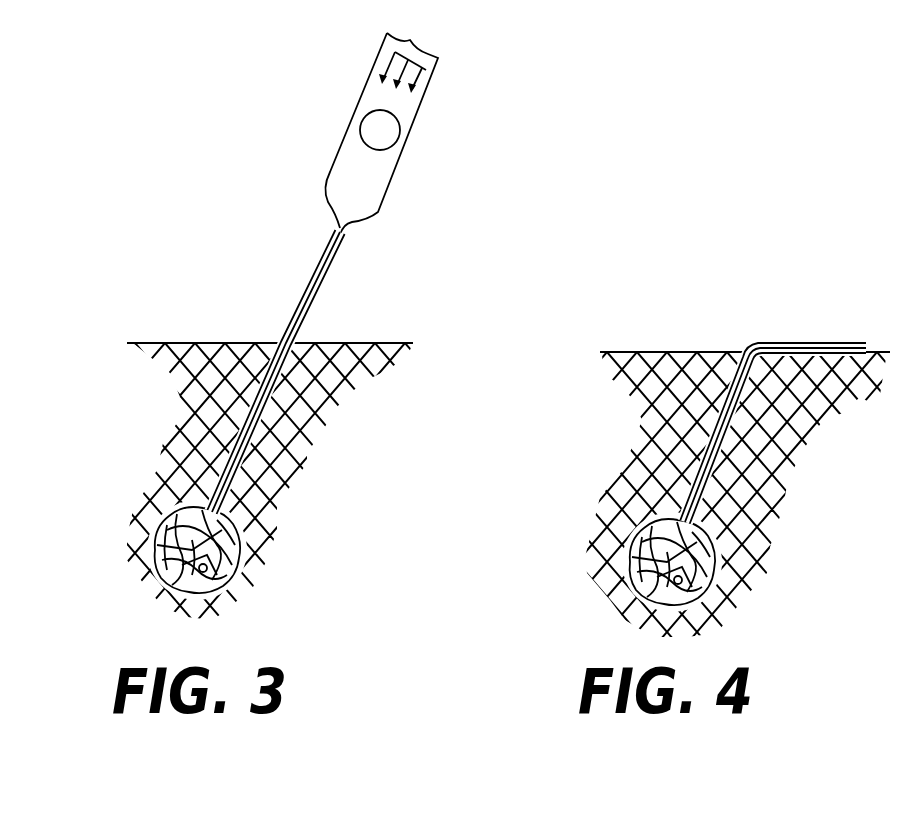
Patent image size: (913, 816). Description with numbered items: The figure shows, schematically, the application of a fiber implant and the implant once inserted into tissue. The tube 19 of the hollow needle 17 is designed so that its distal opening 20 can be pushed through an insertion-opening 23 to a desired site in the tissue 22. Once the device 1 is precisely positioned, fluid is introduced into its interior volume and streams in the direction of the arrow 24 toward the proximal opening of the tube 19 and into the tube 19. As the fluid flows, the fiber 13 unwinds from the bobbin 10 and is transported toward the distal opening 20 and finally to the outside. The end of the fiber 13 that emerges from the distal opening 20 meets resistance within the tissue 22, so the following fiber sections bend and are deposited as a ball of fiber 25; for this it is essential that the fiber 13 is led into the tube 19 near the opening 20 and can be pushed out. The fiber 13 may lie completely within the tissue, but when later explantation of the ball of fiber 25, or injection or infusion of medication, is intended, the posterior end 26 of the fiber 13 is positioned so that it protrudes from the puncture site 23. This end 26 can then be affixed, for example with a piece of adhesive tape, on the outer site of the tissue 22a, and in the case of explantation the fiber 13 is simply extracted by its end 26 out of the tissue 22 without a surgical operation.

In FIG. 3, the device 1 is at (328, 95).
In FIG. 3, the bobbin 10 is at (384, 139).
In FIG. 3, the fiber 13 is at (330, 176).
In FIG. 3, the hollow needle 17 is at (275, 372).
In FIG. 3, the tube 19 is at (303, 294).
In FIG. 3, the distal opening 20 is at (207, 503).
In FIG. 3, the tissue 22 is at (366, 382).
In FIG. 4, the tissue 22 is at (670, 387).
In FIG. 4, the outer site of the tissue 22a is at (724, 348).
In FIG. 3, the insertion-opening 23 is at (278, 344).
In FIG. 4, the insertion-opening 23 is at (774, 398).
In FIG. 3, the arrow 24 is at (422, 68).
In FIG. 3, the ball of fiber 25 is at (153, 560).
In FIG. 4, the ball of fiber 25 is at (713, 560).
In FIG. 4, the posterior end of the fiber 26 is at (848, 343).